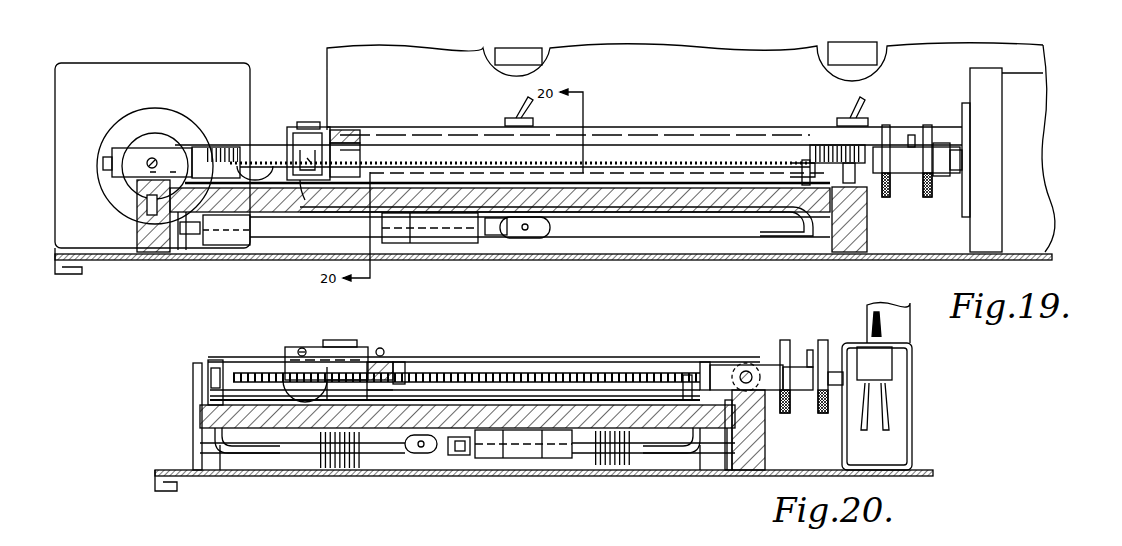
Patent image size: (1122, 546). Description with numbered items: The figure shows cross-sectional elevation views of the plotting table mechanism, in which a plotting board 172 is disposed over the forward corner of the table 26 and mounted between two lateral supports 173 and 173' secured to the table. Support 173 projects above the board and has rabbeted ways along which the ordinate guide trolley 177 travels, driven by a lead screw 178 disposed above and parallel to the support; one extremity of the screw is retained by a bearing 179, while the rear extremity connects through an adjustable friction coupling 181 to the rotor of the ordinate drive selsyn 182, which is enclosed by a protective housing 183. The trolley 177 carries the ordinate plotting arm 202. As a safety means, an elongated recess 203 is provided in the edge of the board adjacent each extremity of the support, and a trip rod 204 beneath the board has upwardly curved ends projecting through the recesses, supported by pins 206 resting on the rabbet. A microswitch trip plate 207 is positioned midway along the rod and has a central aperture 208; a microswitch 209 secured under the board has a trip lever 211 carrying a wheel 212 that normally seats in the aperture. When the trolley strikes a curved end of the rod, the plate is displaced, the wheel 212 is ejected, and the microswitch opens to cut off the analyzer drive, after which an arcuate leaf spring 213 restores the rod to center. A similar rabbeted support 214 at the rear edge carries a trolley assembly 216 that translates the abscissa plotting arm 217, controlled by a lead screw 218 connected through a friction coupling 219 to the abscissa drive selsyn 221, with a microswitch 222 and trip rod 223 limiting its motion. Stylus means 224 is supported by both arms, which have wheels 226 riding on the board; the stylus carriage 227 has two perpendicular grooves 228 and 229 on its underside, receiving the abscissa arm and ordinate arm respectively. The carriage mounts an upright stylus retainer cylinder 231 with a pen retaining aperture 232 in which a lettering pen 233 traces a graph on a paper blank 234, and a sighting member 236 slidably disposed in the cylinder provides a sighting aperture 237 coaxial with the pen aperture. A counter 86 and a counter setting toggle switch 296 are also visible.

In FIG. 19, the table 26 is at (1048, 255).
In FIG. 20, the table 26 is at (155, 474).
In FIG. 19, the counter 86 is at (840, 60).
In FIG. 19, the plotting board 172 is at (668, 208).
In FIG. 20, the plotting board 172 is at (205, 418).
In FIG. 19, the lateral support 173 is at (119, 216).
In FIG. 19, the lateral support 173' is at (874, 235).
In FIG. 19, the ordinate guide trolley 177 is at (113, 170).
In FIG. 20, the ordinate guide trolley 177 is at (270, 370).
In FIG. 19, the lead screw 178 is at (154, 160).
In FIG. 20, the lead screw 178 is at (645, 372).
In FIG. 20, the bearing 179 is at (193, 368).
In FIG. 20, the adjustable friction coupling 181 is at (798, 365).
In FIG. 19, the ordinate drive selsyn 182 is at (118, 120).
In FIG. 19, the protective housing 183 is at (143, 80).
In FIG. 19, the ordinate plotting arm 202 is at (718, 146).
In FIG. 20, the ordinate plotting arm 202 is at (385, 378).
In FIG. 20, the elongated recess 203 is at (278, 425).
In FIG. 19, the trip rod 204 is at (176, 233).
In FIG. 20, the trip rod 204 is at (375, 440).
In FIG. 20, the pins 206 is at (690, 382).
In FIG. 19, the microswitch trip plate 207 is at (184, 232).
In FIG. 20, the microswitch trip plate 207 is at (395, 445).
In FIG. 20, the central aperture 208 is at (470, 456).
In FIG. 19, the microswitch 209 is at (238, 245).
In FIG. 20, the microswitch 209 is at (555, 460).
In FIG. 20, the trip lever 211 is at (470, 452).
In FIG. 19, the wheel 212 is at (195, 235).
In FIG. 20, the wheel 212 is at (455, 452).
In FIG. 20, the arcuate leaf spring 213 is at (220, 448).
In FIG. 20, the rabbeted support 214 is at (762, 425).
In FIG. 19, the trolley assembly 216 is at (245, 150).
In FIG. 19, the abscissa plotting arm 217 is at (350, 148).
In FIG. 20, the abscissa plotting arm 217 is at (538, 358).
In FIG. 19, the lead screw 218 is at (866, 150).
In FIG. 19, the friction coupling 219 is at (898, 190).
In FIG. 19, the abscissa drive selsyn 221 is at (1035, 110).
In FIG. 19, the microswitch 222 is at (430, 240).
In FIG. 19, the trip rod 223 is at (748, 225).
In FIG. 20, the trip rod 223 is at (725, 445).
In FIG. 19, the stylus means 224 is at (333, 117).
In FIG. 20, the stylus means 224 is at (282, 348).
In FIG. 19, the wheels 226 is at (860, 186).
In FIG. 20, the wheels 226 is at (210, 395).
In FIG. 20, the stylus carriage 227 is at (372, 348).
In FIG. 19, the groove 228 is at (338, 143).
In FIG. 20, the groove 228 is at (398, 360).
In FIG. 20, the groove 229 is at (384, 346).
In FIG. 19, the stylus retainer cylinder 231 is at (292, 160).
In FIG. 20, the stylus retainer cylinder 231 is at (333, 352).
In FIG. 19, the pen retaining aperture 232 is at (305, 186).
In FIG. 19, the lettering pen 233 is at (338, 172).
In FIG. 19, the paper blank 234 is at (800, 185).
In FIG. 19, the sighting member 236 is at (300, 130).
In FIG. 20, the sighting member 236 is at (335, 340).
In FIG. 19, the sighting aperture 237 is at (308, 124).
In FIG. 19, the counter setting toggle switch 296 is at (870, 105).